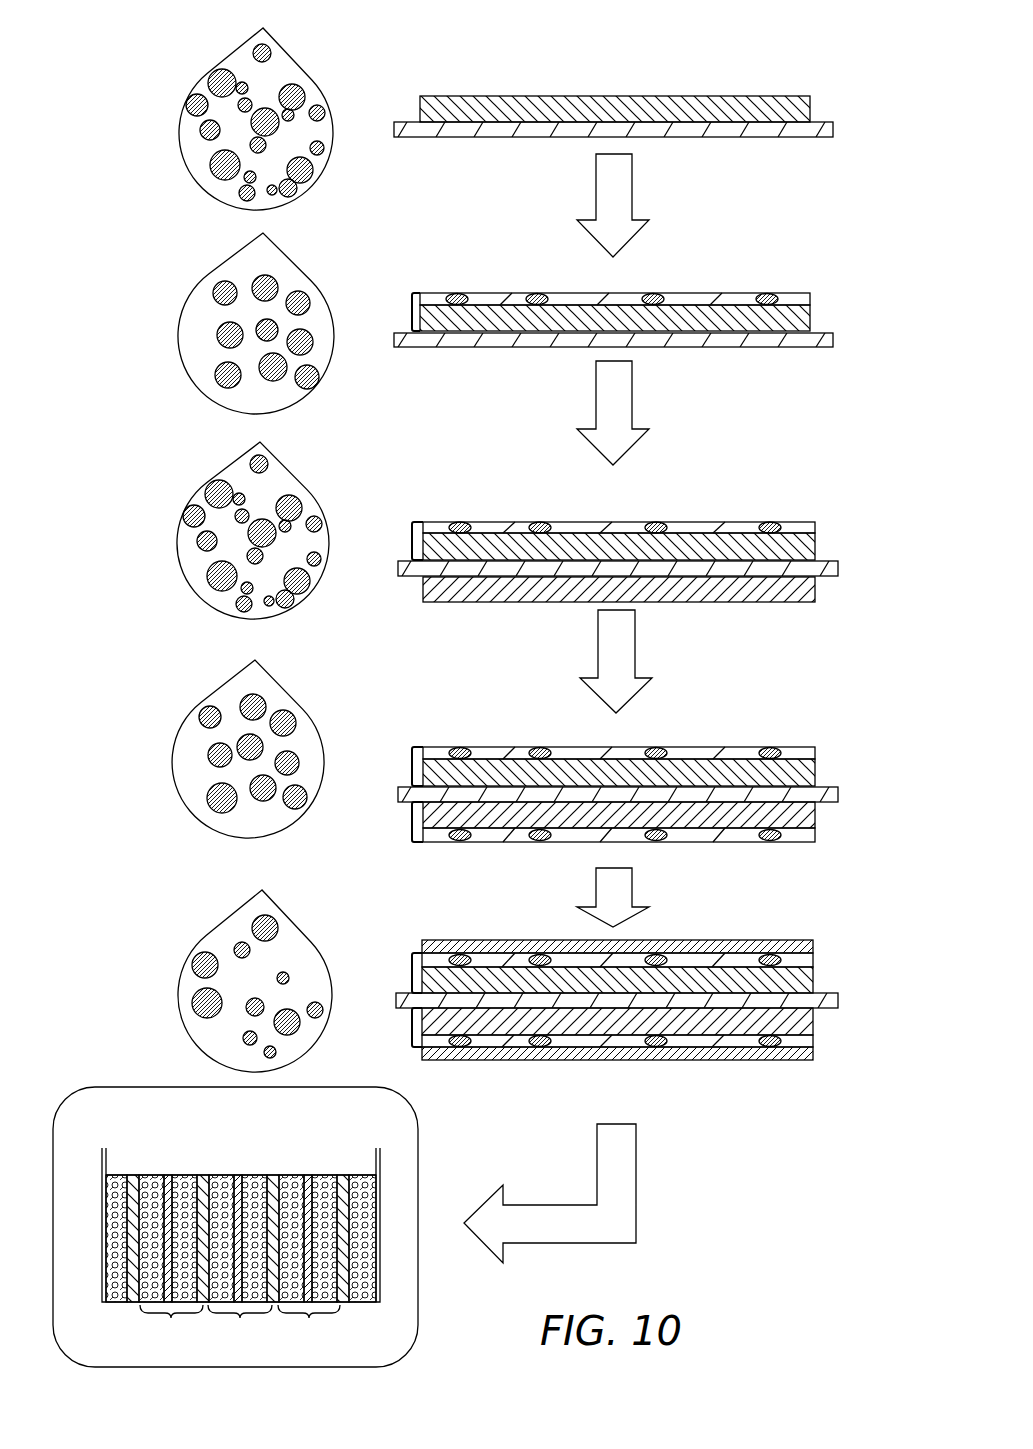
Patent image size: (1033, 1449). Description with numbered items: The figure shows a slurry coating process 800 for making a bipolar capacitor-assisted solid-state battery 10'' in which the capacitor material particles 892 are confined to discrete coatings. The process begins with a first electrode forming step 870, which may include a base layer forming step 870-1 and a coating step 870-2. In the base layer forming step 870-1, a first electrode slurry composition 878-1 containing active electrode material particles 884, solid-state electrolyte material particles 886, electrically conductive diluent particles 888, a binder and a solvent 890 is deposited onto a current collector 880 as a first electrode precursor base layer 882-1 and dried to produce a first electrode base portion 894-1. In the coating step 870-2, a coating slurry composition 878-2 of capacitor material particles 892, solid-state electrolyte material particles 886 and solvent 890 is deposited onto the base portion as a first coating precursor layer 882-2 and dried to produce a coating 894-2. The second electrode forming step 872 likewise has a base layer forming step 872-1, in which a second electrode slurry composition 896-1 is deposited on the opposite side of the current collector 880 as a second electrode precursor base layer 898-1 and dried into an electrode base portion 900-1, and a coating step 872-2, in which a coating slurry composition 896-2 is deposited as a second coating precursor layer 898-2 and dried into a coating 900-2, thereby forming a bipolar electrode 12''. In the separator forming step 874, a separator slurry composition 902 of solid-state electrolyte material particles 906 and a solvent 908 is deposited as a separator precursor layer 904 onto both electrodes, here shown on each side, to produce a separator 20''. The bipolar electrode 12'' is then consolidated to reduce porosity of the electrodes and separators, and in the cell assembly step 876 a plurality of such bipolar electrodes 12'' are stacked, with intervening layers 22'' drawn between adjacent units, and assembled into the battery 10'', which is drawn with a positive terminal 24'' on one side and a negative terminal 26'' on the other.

The slurry coating process 800 is at (724, 42).
The first electrode forming step 870 is at (186, 194).
The base layer forming step 870-1 is at (187, 117).
The coating step 870-2 is at (184, 325).
The first electrode slurry composition 878-1 is at (216, 60).
The coating slurry composition 878-2 is at (178, 302).
The second electrode forming step 872 is at (176, 622).
The base layer forming step 872-1 is at (189, 524).
The coating step 872-2 is at (177, 740).
The second electrode slurry composition 896-1 is at (226, 461).
The coating slurry composition 896-2 is at (211, 686).
The separator forming step 874 is at (186, 968).
The cell assembly step 876 is at (257, 1191).
The current collector 880 is at (766, 129).
The first electrode precursor base layer 882-1 is at (767, 108).
The first coating precursor layer 882-2 is at (750, 300).
The active electrode material particles 884 is at (222, 170).
The solid-state electrolyte material particles 886 is at (196, 110).
The electrically conductive diluent particles 888 is at (268, 50).
The solvent 890 is at (322, 163).
The capacitor material particles 892 is at (658, 301).
The first electrode base portion 894-1 is at (802, 322).
The coating 894-2 is at (812, 528).
The second electrode precursor base layer 898-1 is at (756, 592).
The second coating precursor layer 898-2 is at (750, 835).
The electrode base portion 900-1 is at (808, 814).
The coating 900-2 is at (806, 1042).
The separator slurry composition 902 is at (206, 931).
The separator precursor layer 904 is at (755, 945).
The solid-state electrolyte material particles 906 is at (205, 1006).
The solvent 908 is at (308, 1040).
The bipolar capacitor-assisted solid-state battery 10'' is at (266, 1219).
The bipolar electrode 12'' is at (277, 999).
The separator 20'' is at (233, 1219).
The separator 22'' is at (251, 1215).
The positive terminal 24'' is at (80, 1182).
The negative terminal 26'' is at (427, 1141).